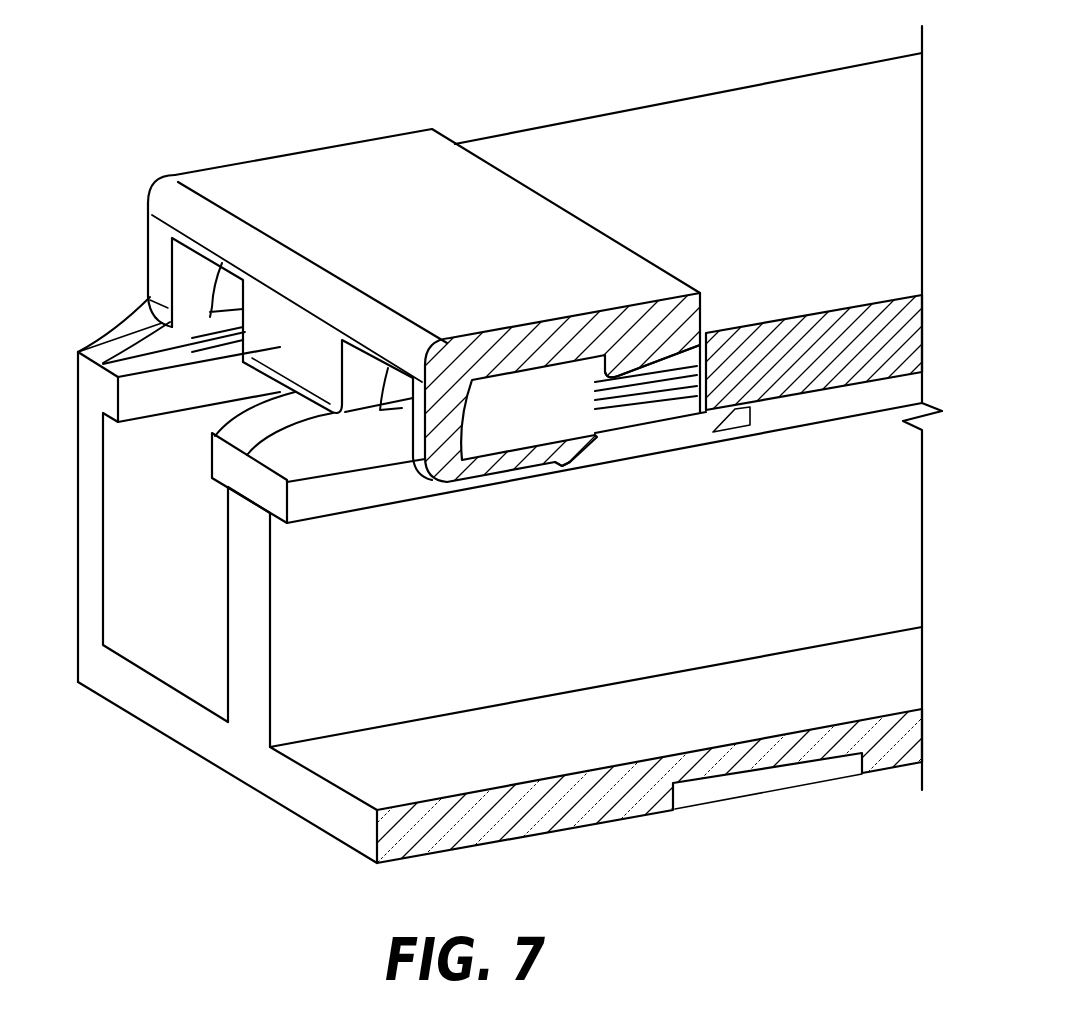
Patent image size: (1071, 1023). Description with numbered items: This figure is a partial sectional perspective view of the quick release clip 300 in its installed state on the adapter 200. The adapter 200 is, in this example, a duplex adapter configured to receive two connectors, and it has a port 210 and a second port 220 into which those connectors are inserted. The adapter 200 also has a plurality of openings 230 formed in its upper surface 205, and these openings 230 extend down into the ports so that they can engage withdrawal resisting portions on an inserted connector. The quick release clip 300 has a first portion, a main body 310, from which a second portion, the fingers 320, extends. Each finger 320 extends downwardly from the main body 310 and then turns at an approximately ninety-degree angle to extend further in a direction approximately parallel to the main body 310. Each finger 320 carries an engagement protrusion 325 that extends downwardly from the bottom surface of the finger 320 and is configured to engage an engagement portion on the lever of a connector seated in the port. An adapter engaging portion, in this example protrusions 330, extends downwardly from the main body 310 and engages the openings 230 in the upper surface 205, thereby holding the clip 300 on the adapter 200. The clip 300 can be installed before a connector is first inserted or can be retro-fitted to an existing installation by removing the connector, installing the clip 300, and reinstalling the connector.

The adapter 200 is at (648, 163).
The upper surface 205 is at (570, 157).
The port 210 is at (418, 683).
The second port 220 is at (183, 578).
The openings 230 is at (673, 380).
The quick release clip 300 is at (307, 180).
The main body 310 is at (370, 202).
The fingers 320 is at (203, 323).
The engagement protrusion 325 is at (587, 457).
The protrusions 330 is at (625, 358).